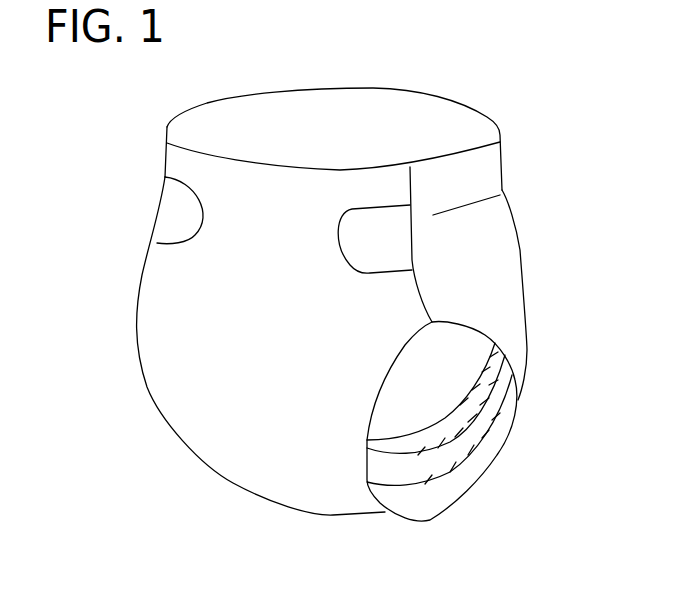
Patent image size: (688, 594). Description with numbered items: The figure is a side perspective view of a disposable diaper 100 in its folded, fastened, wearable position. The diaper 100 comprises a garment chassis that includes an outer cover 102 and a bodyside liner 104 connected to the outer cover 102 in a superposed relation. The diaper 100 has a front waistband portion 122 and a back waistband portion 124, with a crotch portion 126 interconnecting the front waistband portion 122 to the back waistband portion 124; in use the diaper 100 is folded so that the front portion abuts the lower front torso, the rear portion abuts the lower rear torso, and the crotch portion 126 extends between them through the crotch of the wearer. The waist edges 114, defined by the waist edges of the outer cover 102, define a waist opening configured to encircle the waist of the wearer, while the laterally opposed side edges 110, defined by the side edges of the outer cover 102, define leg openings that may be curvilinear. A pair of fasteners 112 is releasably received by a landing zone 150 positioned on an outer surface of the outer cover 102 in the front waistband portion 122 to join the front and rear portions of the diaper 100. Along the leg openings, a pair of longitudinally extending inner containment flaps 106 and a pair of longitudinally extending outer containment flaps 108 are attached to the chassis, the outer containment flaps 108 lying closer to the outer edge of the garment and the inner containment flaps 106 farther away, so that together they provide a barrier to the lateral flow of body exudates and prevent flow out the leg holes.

The diaper 100 is at (512, 172).
The outer cover 102 is at (263, 493).
The bodyside liner 104 is at (450, 367).
The inner containment flaps 106 is at (490, 367).
The outer containment flaps 108 is at (498, 385).
The side edges 110 is at (475, 477).
The fasteners 112 is at (165, 205).
The waist edges 114 is at (200, 157).
The front waistband portion 122 is at (227, 238).
The back waistband portion 124 is at (500, 143).
The crotch portion 126 is at (380, 527).
The landing zone 150 is at (158, 243).